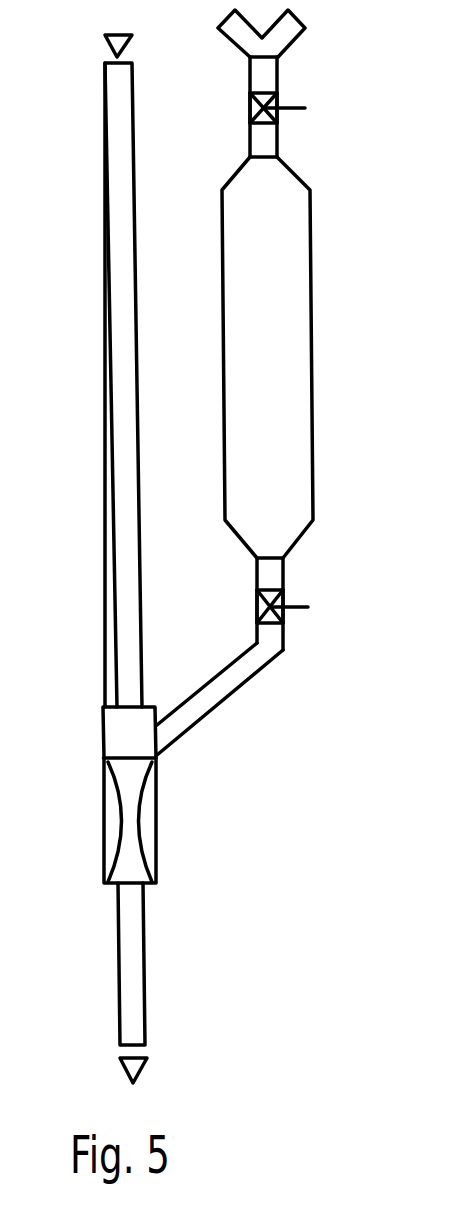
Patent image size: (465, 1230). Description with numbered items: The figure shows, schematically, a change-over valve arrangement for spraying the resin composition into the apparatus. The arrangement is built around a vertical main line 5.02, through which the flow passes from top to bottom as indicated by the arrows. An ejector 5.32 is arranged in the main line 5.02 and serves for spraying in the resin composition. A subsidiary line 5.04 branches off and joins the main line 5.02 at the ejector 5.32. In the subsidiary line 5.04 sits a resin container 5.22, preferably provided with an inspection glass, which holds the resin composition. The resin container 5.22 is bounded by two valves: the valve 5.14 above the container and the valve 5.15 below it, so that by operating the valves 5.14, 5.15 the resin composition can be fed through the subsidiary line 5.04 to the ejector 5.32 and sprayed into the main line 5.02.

The main line 5.02 is at (110, 290).
The subsidiary line 5.04 is at (222, 705).
The valve 5.14 is at (280, 115).
The valve 5.15 is at (288, 612).
The resin container 5.22 is at (311, 295).
The ejector 5.32 is at (137, 820).